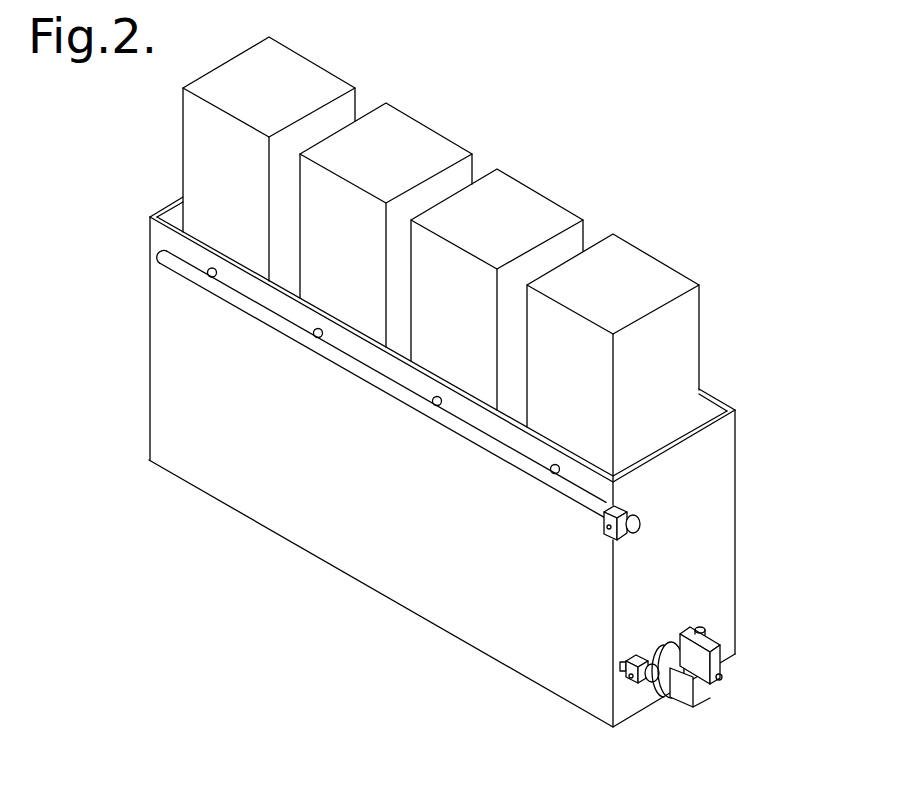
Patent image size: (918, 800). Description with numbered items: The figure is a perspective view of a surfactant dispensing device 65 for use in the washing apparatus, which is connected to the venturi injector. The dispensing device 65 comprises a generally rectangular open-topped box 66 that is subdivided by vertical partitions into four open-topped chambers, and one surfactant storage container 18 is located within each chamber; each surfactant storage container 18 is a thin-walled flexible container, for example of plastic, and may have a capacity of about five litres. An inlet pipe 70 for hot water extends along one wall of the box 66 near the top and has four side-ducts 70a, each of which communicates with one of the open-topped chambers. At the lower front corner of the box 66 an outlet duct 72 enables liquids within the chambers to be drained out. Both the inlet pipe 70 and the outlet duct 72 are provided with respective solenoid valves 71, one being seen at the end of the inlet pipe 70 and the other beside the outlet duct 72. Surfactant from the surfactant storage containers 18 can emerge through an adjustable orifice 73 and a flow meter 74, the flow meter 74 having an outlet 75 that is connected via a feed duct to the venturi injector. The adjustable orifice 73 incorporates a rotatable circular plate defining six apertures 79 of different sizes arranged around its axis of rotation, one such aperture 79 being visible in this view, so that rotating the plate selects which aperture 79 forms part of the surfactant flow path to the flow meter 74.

The surfactant storage container 18 is at (322, 86).
The surfactant dispensing device 65 is at (718, 216).
The open-topped box 66 is at (734, 410).
The inlet pipe 70 is at (360, 368).
The side-duct 70a is at (318, 338).
The solenoid valve 71 is at (610, 538).
The outlet duct 72 is at (670, 700).
The adjustable orifice 73 is at (688, 688).
The flow meter 74 is at (722, 661).
The outlet 75 is at (724, 680).
The aperture 79 is at (678, 650).